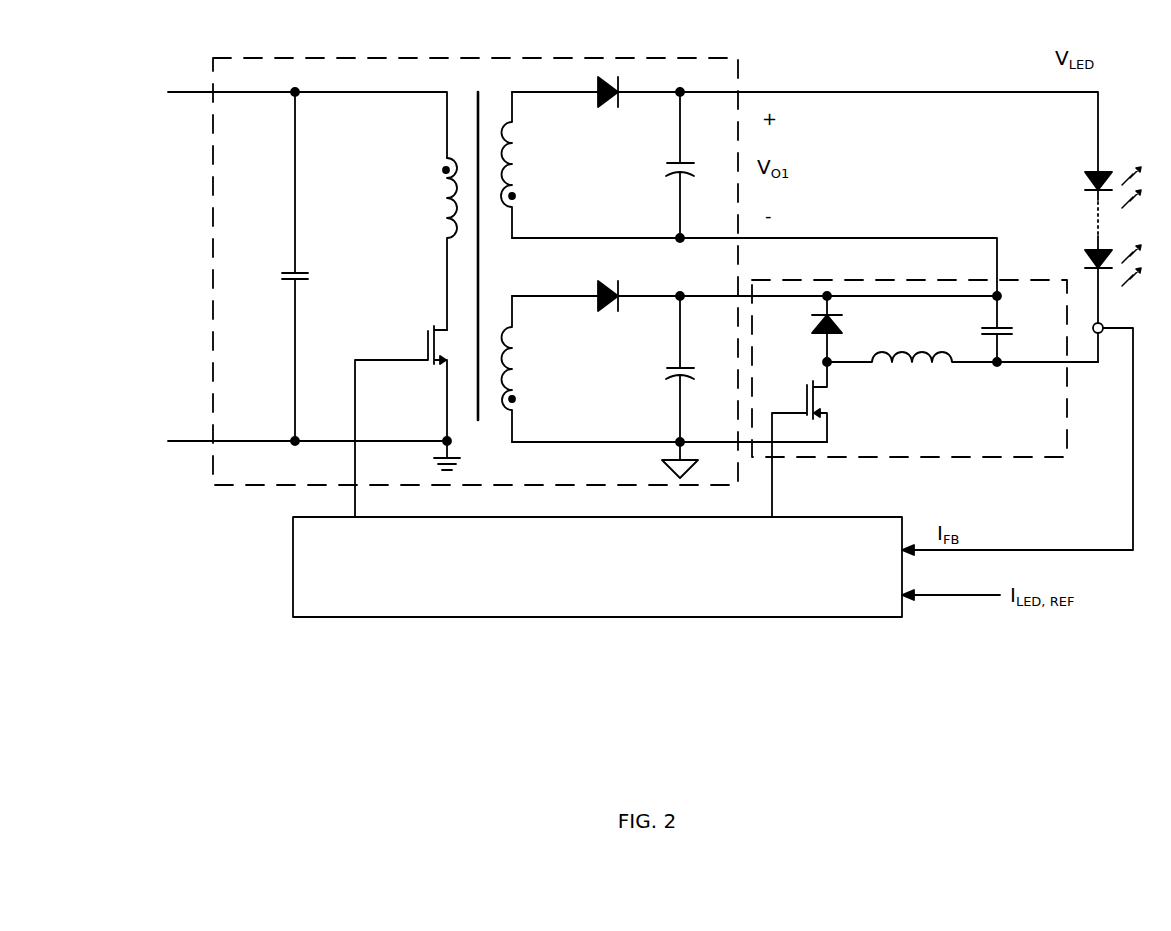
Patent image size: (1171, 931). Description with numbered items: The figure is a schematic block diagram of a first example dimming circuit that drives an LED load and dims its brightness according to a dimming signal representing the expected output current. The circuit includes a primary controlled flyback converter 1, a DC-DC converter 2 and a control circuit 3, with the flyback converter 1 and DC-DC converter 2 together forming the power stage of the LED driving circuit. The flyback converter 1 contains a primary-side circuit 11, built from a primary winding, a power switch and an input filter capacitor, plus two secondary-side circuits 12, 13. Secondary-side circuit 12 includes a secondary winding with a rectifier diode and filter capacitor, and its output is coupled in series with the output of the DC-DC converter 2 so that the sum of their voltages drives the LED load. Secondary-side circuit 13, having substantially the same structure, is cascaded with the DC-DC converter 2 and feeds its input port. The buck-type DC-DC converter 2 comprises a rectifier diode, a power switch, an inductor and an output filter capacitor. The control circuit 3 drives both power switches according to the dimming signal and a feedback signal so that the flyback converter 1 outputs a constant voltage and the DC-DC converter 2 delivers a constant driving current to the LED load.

The primary controlled flyback converter 1 is at (453, 258).
The primary-side circuit 11 is at (370, 259).
The secondary-side circuit 12 is at (619, 159).
The secondary-side circuit 13 is at (620, 379).
The DC-DC converter 2 is at (1015, 457).
The control circuit 3 is at (757, 617).